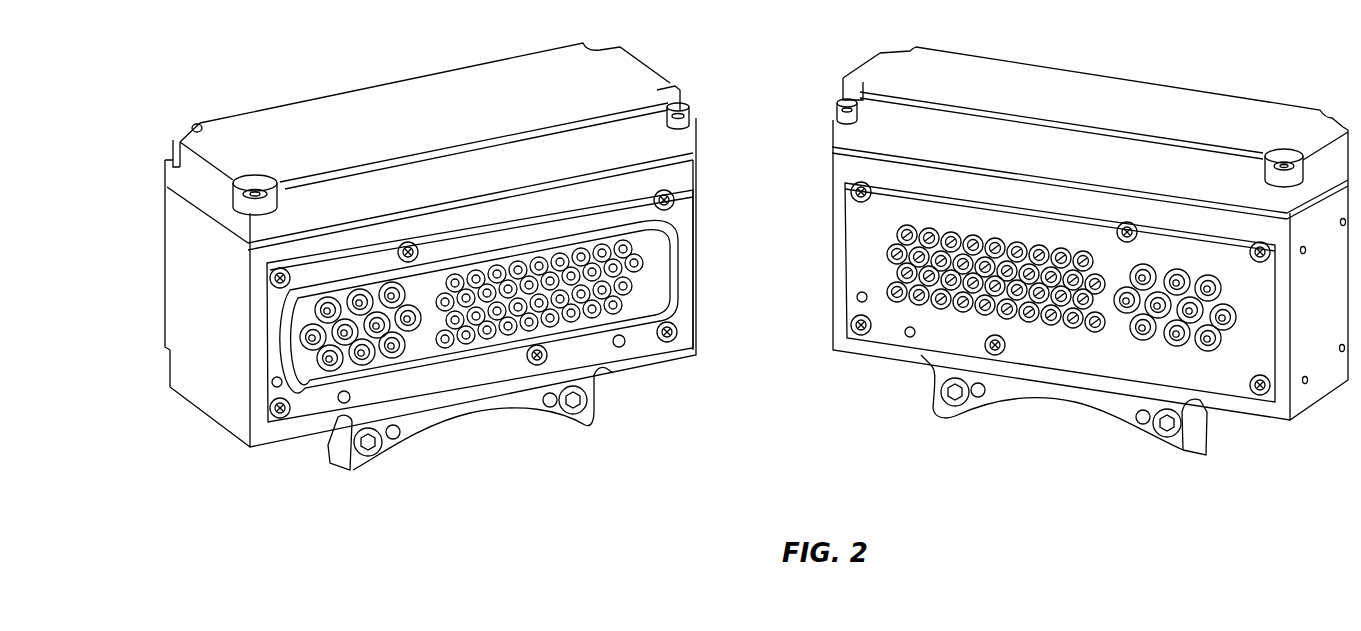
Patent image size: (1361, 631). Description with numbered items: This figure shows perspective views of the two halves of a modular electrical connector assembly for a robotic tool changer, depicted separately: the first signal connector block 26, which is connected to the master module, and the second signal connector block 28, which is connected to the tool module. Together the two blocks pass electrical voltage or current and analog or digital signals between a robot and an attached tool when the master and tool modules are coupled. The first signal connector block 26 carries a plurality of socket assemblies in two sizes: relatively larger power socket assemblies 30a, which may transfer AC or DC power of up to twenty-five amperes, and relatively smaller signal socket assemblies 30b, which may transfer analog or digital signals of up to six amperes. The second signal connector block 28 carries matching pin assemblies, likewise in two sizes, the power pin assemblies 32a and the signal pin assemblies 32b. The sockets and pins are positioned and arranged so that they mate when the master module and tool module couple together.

The first signal connector block 26 is at (347, 123).
The second signal connector block 28 is at (1183, 117).
The power socket assemblies 30a is at (335, 367).
The signal socket assemblies 30b is at (637, 263).
The power pin assemblies 32a is at (1215, 352).
The signal pin assemblies 32b is at (933, 306).